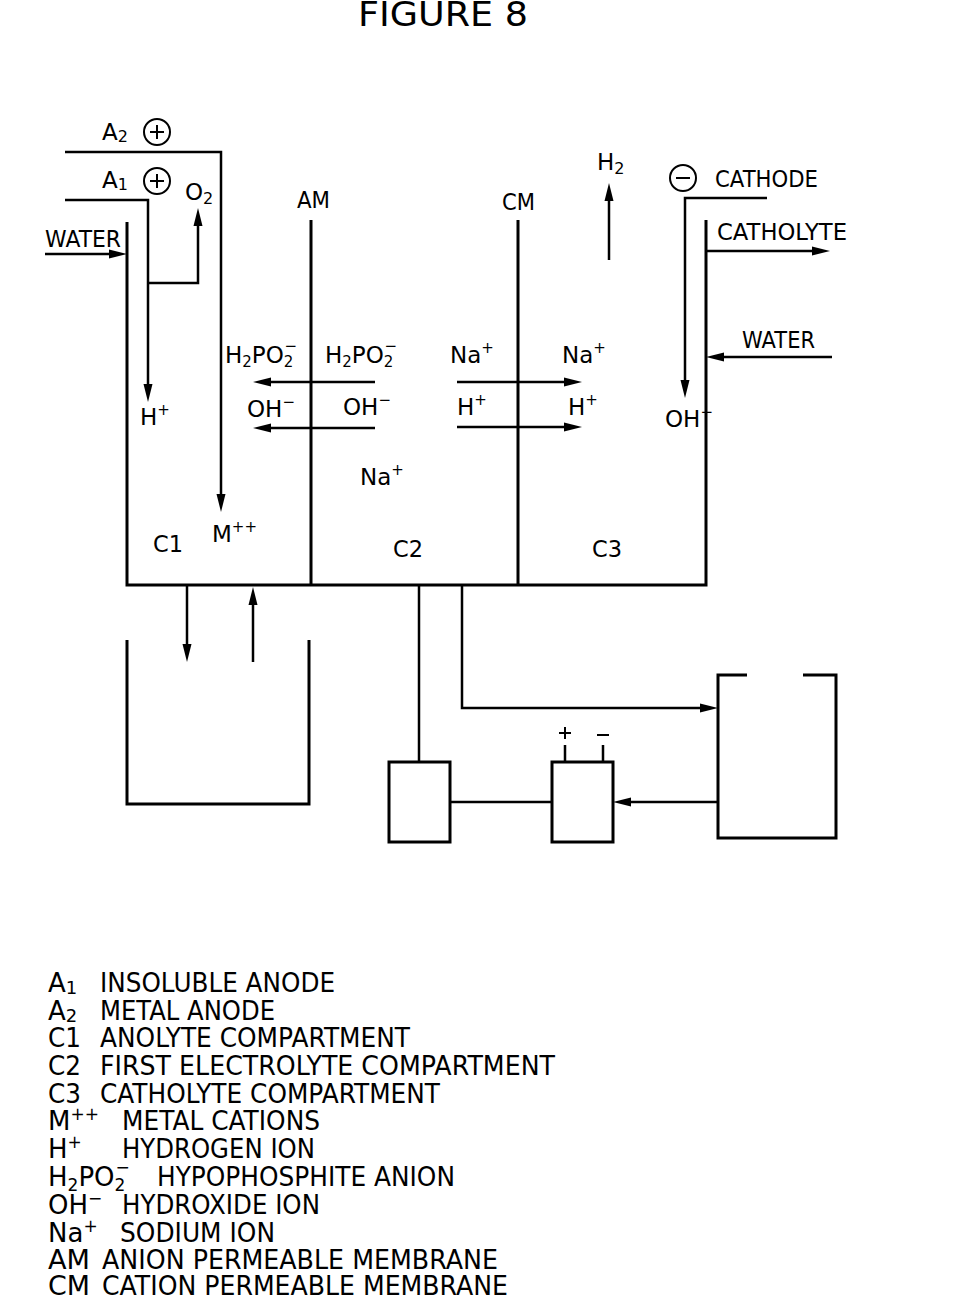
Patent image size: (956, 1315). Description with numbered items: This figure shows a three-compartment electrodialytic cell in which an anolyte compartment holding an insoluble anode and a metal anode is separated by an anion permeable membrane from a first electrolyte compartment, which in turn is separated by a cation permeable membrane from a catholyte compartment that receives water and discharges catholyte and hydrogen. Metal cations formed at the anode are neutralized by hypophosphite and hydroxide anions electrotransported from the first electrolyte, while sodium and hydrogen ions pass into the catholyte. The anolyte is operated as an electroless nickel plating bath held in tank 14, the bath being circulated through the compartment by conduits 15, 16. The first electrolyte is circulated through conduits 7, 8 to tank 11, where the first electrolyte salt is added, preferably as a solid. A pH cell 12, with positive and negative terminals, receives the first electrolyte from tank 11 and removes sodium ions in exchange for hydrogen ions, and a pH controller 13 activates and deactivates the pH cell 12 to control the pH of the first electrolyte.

The conduit 7 is at (590, 649).
The conduit 8 is at (665, 789).
The tank 11 is at (776, 748).
The pH control cell 12 is at (580, 799).
The pH controller 13 is at (448, 741).
The plating bath tank 14 is at (218, 722).
The conduit 15 is at (171, 623).
The conduit 16 is at (271, 624).